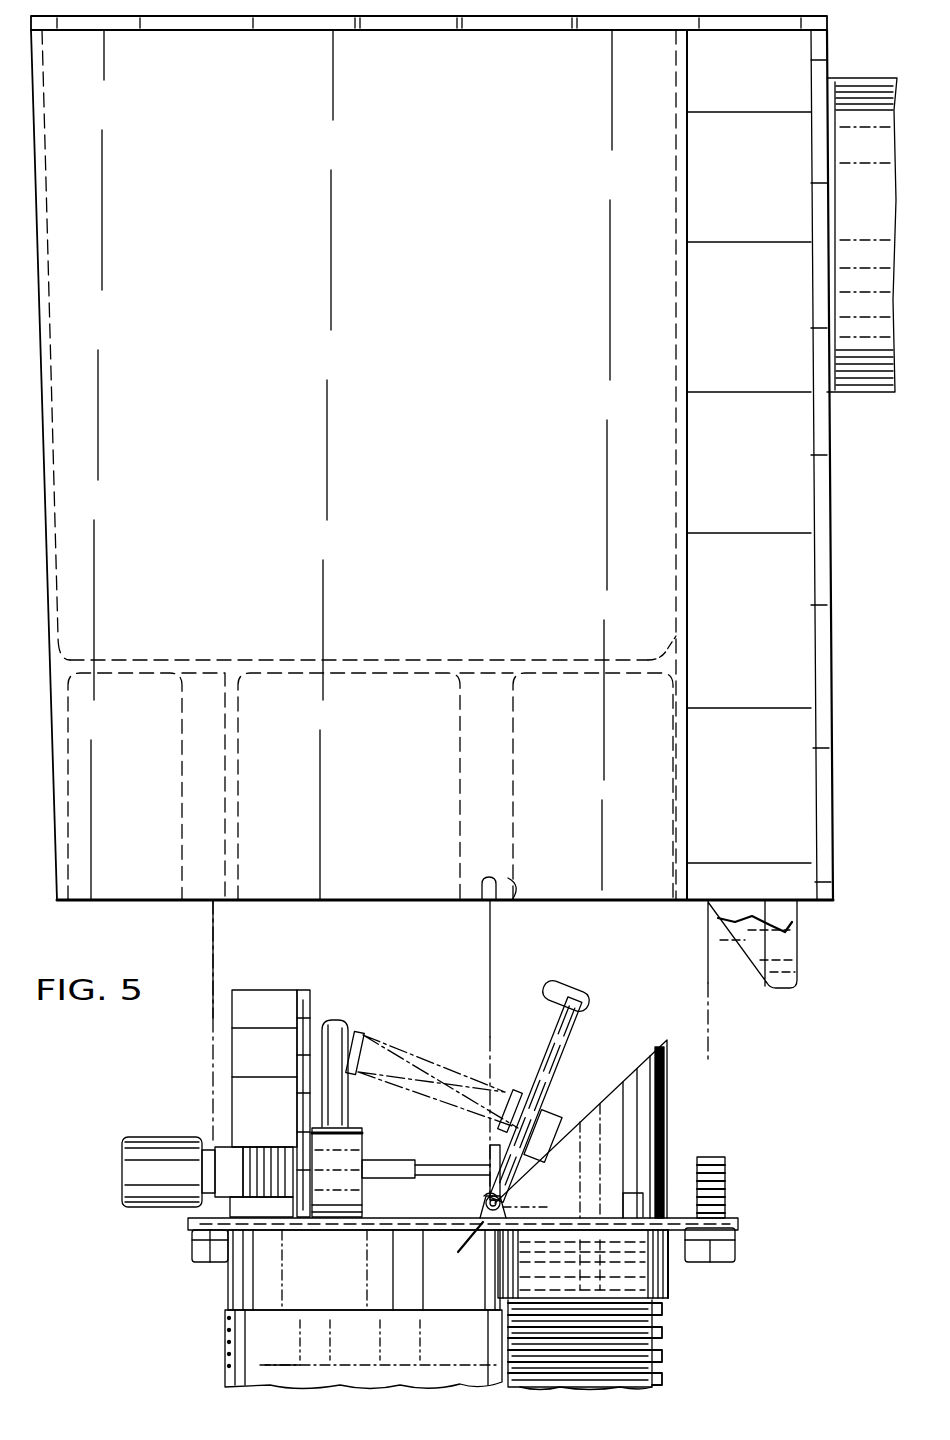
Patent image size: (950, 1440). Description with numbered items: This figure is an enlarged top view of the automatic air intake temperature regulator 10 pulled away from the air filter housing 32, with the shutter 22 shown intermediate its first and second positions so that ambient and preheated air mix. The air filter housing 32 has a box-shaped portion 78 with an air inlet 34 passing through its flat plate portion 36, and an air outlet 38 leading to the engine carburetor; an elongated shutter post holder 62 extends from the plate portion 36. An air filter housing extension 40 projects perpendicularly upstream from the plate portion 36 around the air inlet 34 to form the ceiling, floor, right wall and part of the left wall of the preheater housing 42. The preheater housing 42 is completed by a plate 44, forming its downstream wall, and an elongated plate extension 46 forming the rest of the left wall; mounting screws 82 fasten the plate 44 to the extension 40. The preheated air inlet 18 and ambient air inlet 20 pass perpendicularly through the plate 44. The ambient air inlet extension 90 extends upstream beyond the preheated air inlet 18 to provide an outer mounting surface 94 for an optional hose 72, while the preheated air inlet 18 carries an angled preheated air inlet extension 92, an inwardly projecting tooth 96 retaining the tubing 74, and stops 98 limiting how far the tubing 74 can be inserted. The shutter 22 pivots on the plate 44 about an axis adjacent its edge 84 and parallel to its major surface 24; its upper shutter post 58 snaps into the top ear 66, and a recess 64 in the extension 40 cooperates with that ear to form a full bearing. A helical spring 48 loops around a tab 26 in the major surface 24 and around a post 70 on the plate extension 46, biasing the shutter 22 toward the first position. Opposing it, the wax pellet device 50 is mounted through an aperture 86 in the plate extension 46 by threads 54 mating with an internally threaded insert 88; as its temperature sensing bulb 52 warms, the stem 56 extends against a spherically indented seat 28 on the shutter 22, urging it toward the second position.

The automatic air intake temperature regulator 10 is at (152, 1056).
The preheated air inlet 18 is at (668, 1293).
The ambient air inlet 20 is at (228, 1295).
The shutter 22 is at (578, 1024).
The major surface 24 is at (553, 1040).
The tab 26 is at (555, 1118).
The seat 28 is at (490, 1152).
The air filter housing 32 is at (833, 677).
The air inlet 34 is at (668, 652).
The flat plate portion 36 is at (250, 660).
The air outlet 38 is at (868, 392).
The air filter housing extension 40 is at (240, 840).
The preheater housing 42 is at (740, 1222).
The plate 44 is at (675, 1233).
The plate extension 46 is at (280, 990).
The spring 48 is at (370, 1040).
The wax pellet device 50 is at (215, 1150).
The temperature sensing bulb 52 is at (130, 1140).
The threads 54 is at (278, 1147).
The stem 56 is at (415, 1138).
The upper shutter post 58 is at (515, 1200).
The shutter post holder 62 is at (517, 718).
The recess 64 is at (497, 882).
The top ear 66 is at (517, 904).
The post 70 is at (338, 1022).
The hose 72 is at (225, 1375).
The tubing 74 is at (650, 1382).
The box-shaped portion 78 is at (52, 356).
The mounting screws 82 is at (192, 1250).
The edge 84 is at (451, 1245).
The aperture 86 is at (298, 1115).
The internally threaded insert 88 is at (360, 1202).
The ambient air inlet extension 90 is at (306, 1370).
The preheated air inlet extension 92 is at (620, 1090).
The outer mounting surface 94 is at (225, 1340).
The tooth 96 is at (650, 1338).
The stops 98 is at (549, 1207).